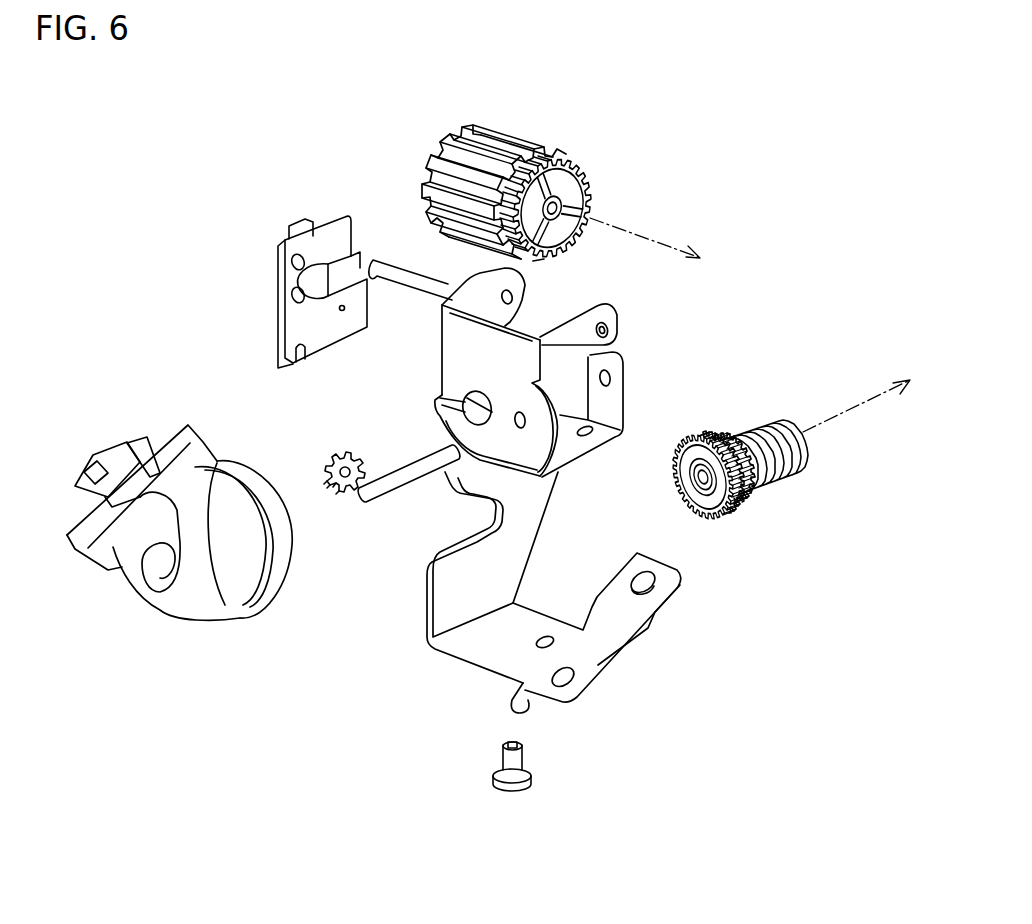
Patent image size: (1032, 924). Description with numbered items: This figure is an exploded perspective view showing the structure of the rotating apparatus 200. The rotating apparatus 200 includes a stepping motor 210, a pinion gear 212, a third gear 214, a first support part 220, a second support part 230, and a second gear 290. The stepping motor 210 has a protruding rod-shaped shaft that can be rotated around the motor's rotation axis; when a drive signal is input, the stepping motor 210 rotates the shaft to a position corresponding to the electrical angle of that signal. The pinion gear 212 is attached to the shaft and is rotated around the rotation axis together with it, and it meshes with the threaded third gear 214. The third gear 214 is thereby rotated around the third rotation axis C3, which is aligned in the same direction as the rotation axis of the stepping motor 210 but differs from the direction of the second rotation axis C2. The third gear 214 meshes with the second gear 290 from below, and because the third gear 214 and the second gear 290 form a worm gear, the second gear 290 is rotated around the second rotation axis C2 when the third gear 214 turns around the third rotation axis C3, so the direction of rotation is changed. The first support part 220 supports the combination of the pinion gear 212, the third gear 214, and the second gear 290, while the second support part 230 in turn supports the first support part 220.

The rotating apparatus 200 is at (508, 912).
The stepping motor 210 is at (180, 603).
The pinion gear 212 is at (340, 445).
The third gear 214 is at (763, 483).
The first support part 220 is at (577, 343).
The second support part 230 is at (473, 650).
The second gear 290 is at (508, 138).
The second rotation axis C2 is at (641, 233).
The third rotation axis C3 is at (846, 413).